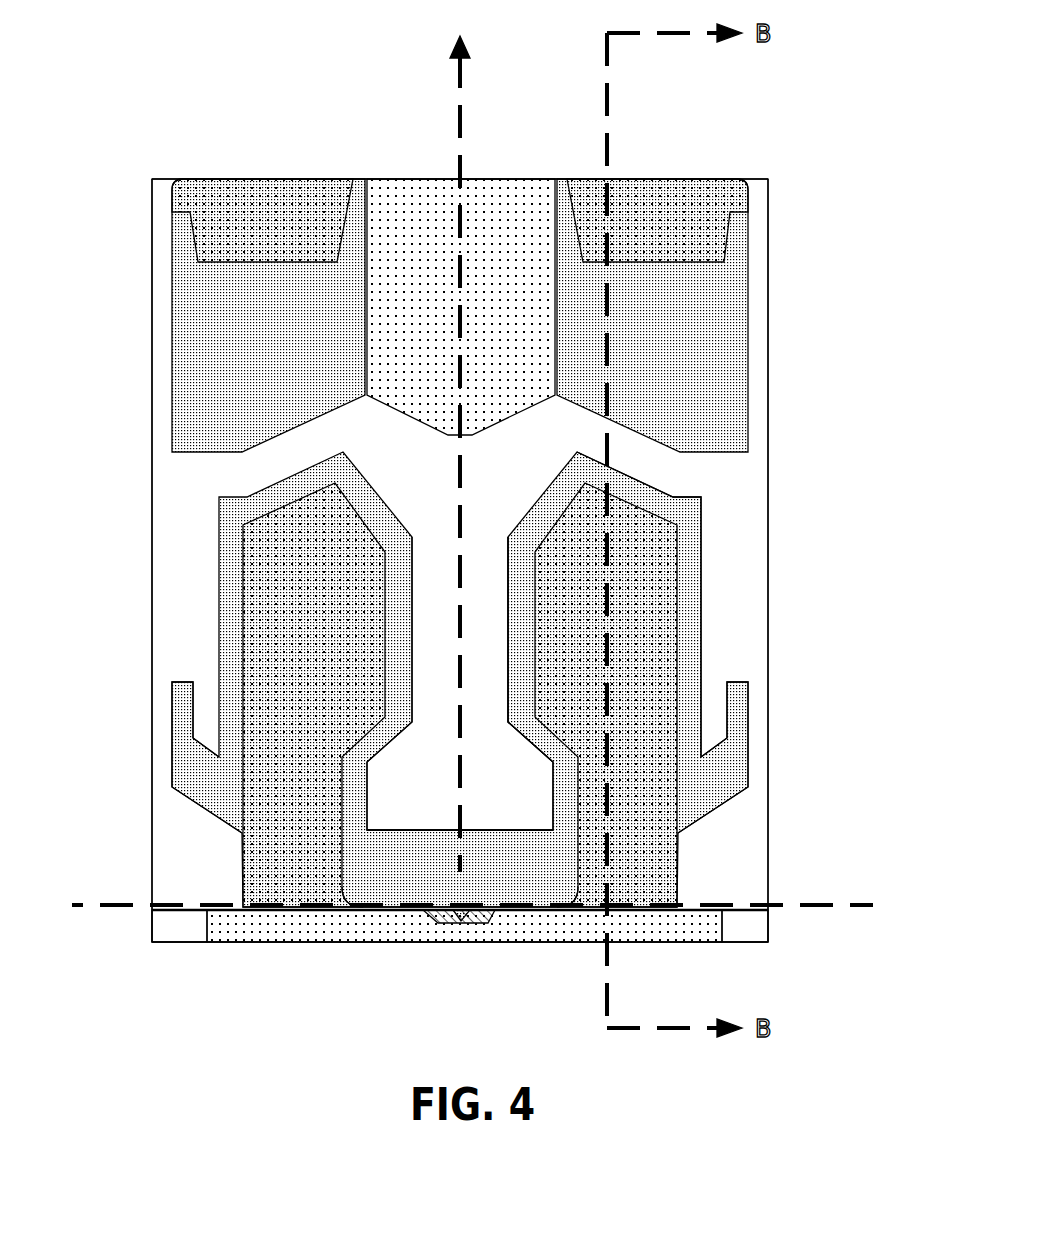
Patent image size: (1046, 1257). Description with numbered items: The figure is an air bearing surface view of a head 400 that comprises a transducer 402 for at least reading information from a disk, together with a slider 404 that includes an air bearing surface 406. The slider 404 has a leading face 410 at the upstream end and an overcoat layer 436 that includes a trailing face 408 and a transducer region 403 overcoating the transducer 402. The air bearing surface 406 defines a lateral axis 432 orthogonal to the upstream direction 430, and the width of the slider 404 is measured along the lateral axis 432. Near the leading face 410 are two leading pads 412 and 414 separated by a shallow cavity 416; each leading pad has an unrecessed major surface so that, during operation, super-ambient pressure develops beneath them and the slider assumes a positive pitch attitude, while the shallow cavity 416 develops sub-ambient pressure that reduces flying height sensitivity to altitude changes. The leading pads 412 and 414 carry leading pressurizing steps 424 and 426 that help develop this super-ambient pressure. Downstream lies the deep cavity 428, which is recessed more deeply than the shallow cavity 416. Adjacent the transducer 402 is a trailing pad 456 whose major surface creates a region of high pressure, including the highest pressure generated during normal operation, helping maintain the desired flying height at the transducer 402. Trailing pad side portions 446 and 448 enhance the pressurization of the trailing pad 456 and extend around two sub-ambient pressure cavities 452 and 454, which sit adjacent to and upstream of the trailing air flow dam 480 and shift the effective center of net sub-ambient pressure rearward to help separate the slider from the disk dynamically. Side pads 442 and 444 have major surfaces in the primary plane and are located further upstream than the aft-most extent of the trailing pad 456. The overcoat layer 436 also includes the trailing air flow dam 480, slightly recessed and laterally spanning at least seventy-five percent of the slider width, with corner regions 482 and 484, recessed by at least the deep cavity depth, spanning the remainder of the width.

The head 400 is at (165, 123).
The transducer 402 is at (462, 925).
The transducer region 403 is at (438, 927).
The slider 404 is at (152, 518).
The air bearing surface 406 is at (758, 287).
The trailing face 408 is at (292, 943).
The leading face 410 is at (330, 178).
The leading pad 412 is at (297, 349).
The leading pad 414 is at (669, 349).
The shallow cavity 416 is at (483, 228).
The leading pressurizing step 424 is at (279, 232).
The leading pressurizing step 426 is at (670, 232).
The deep cavity 428 is at (435, 481).
The upstream direction 430 is at (468, 438).
The lateral axis 432 is at (118, 907).
The overcoat layer 436 is at (770, 919).
The side pad 442 is at (225, 789).
The side pad 444 is at (737, 789).
The trailing pad side portion 446 is at (400, 648).
The trailing pad side portion 448 is at (522, 673).
The sub-ambient pressure cavity 452 is at (294, 592).
The sub-ambient pressure cavity 454 is at (665, 592).
The trailing pad 456 is at (544, 874).
The trailing air flow dam 480 is at (390, 930).
The corner region 482 is at (732, 930).
The corner region 484 is at (180, 923).